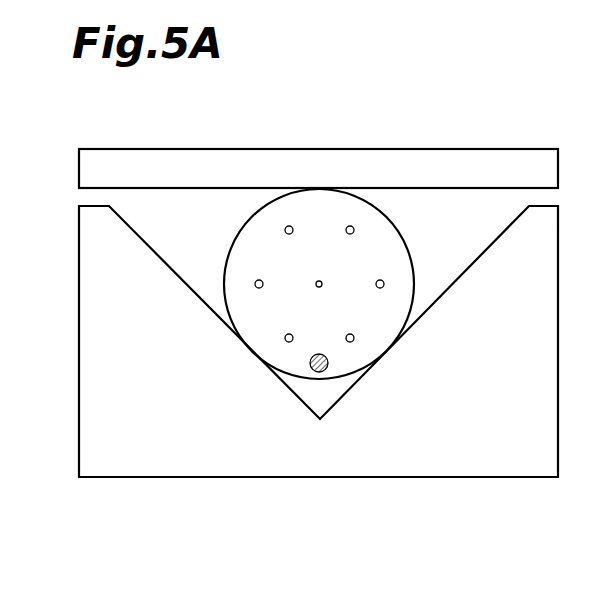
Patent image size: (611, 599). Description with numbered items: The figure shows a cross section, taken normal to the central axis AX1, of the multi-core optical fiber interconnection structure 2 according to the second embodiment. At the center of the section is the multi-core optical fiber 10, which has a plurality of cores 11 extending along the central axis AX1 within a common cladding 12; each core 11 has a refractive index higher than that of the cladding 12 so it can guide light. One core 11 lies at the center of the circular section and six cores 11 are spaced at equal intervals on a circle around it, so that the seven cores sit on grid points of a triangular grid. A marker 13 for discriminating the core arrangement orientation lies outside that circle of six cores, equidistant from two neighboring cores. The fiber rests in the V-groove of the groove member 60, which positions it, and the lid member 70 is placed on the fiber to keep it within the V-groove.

The multi-core optical fiber interconnection structure 2 is at (317, 113).
The multi-core optical fiber 10 is at (256, 212).
The cores 11 is at (322, 281).
The cladding 12 is at (383, 236).
The marker 13 is at (312, 372).
The groove member 60 is at (170, 465).
The lid member 70 is at (168, 162).
The central axis AX1 is at (323, 282).